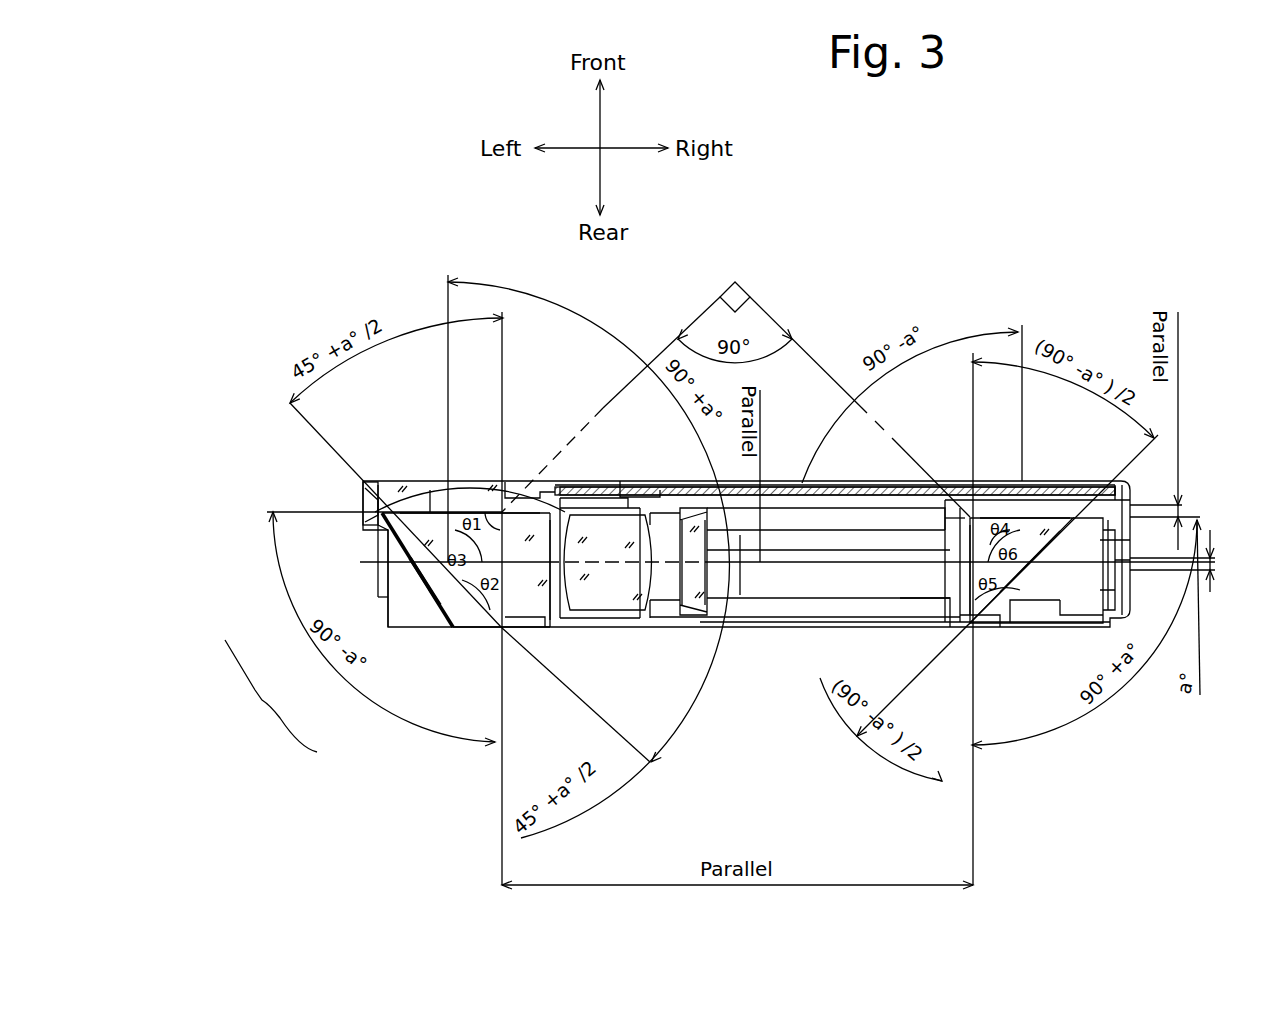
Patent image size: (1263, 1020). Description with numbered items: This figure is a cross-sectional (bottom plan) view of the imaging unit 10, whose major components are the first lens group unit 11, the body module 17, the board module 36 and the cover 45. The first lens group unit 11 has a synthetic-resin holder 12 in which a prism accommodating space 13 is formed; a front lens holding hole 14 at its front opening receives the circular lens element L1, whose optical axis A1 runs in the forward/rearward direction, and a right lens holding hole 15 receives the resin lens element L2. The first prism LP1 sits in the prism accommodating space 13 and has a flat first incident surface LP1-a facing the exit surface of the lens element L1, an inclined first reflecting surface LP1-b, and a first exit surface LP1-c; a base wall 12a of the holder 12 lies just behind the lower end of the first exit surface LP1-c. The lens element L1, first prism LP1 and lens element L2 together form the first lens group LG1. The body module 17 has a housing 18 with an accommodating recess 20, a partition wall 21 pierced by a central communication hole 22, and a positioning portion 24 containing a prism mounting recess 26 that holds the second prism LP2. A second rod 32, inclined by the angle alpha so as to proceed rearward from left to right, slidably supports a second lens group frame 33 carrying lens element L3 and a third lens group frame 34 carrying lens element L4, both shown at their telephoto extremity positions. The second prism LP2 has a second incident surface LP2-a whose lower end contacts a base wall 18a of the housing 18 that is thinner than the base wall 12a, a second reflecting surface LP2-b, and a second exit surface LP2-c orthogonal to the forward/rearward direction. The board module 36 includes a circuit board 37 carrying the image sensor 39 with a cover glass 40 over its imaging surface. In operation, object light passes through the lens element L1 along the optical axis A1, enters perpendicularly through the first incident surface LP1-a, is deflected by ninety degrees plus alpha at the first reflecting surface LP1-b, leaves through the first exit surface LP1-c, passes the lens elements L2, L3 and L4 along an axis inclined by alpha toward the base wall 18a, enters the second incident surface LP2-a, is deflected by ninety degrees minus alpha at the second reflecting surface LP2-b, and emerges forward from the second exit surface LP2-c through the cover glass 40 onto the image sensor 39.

The imaging unit 10 is at (840, 268).
The first lens group unit 11 is at (362, 498).
The holder 12 is at (407, 598).
The base wall of the holder 12a is at (508, 628).
The prism accommodating space 13 is at (432, 490).
The front lens holding hole 14 is at (386, 497).
The right lens holding hole 15 is at (547, 627).
The body module 17 is at (967, 480).
The housing 18 is at (937, 628).
The base wall of the housing 18a is at (985, 628).
The accommodating recess 20 is at (806, 480).
The partition wall 21 is at (509, 480).
The communication hole 22 is at (578, 482).
The positioning portion 24 is at (1036, 600).
The prism mounting recess 26 is at (1062, 600).
The second rod 32 is at (872, 543).
The second lens group frame 33 is at (610, 600).
The third lens group frame 34 is at (690, 505).
The board module 36 is at (928, 480).
The circuit board 37 is at (928, 480).
The image sensor 39 is at (1070, 478).
The cover glass 40 is at (1085, 478).
The cover 45 is at (630, 470).
The lens element L1 is at (435, 522).
The lens element L2 is at (598, 612).
The lens element L3 is at (627, 603).
The lens element L4 is at (715, 610).
The first lens group LG1 is at (269, 696).
The first prism LP1 is at (459, 582).
The first incident surface LP1-a is at (460, 510).
The first reflecting surface LP1-b is at (457, 612).
The first exit surface LP1-c is at (548, 630).
The second prism LP2 is at (1036, 513).
The second incident surface LP2-a is at (905, 590).
The second reflecting surface LP2-b is at (1055, 585).
The second exit surface LP2-c is at (1000, 478).
The optical axis A1 is at (450, 392).